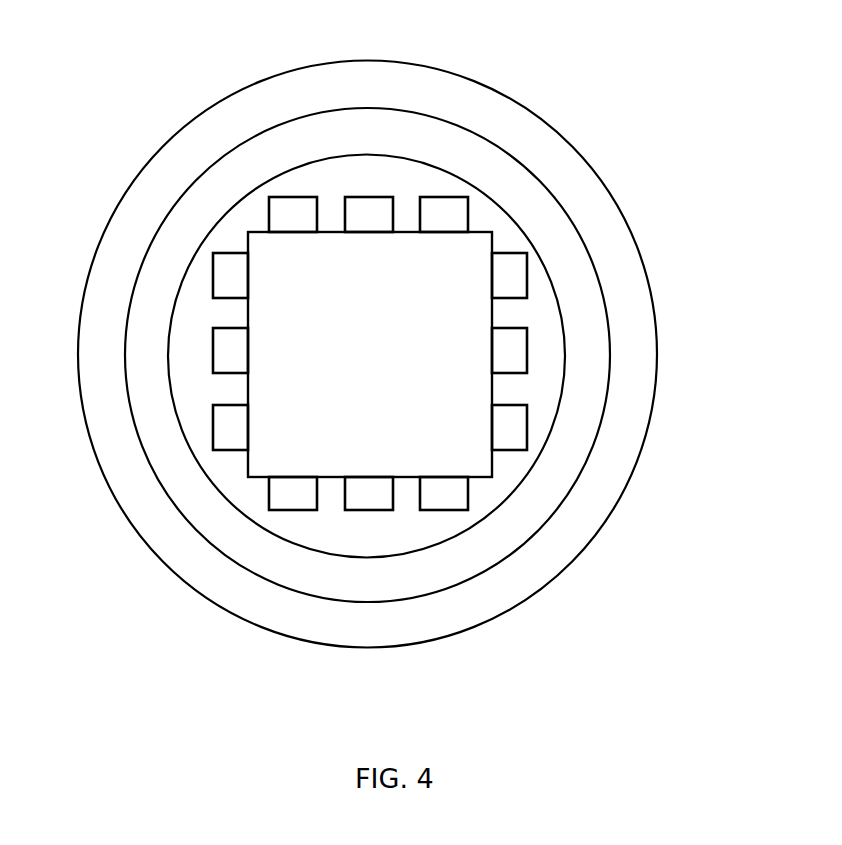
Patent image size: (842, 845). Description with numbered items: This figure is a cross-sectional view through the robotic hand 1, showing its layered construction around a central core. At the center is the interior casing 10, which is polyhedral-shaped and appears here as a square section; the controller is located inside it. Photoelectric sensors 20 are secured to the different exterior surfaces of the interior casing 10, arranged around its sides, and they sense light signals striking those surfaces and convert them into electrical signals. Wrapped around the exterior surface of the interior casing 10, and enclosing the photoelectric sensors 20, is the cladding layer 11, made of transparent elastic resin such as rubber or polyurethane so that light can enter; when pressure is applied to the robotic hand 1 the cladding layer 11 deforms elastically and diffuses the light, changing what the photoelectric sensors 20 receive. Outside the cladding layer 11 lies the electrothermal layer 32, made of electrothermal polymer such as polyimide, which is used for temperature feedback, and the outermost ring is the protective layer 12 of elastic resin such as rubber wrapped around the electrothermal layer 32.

The robotic hand 1 is at (160, 60).
The interior casing 10 is at (453, 463).
The cladding layer 11 is at (545, 322).
The protective layer 12 is at (562, 171).
The photoelectric sensors 20 is at (510, 363).
The electrothermal layer 32 is at (572, 248).